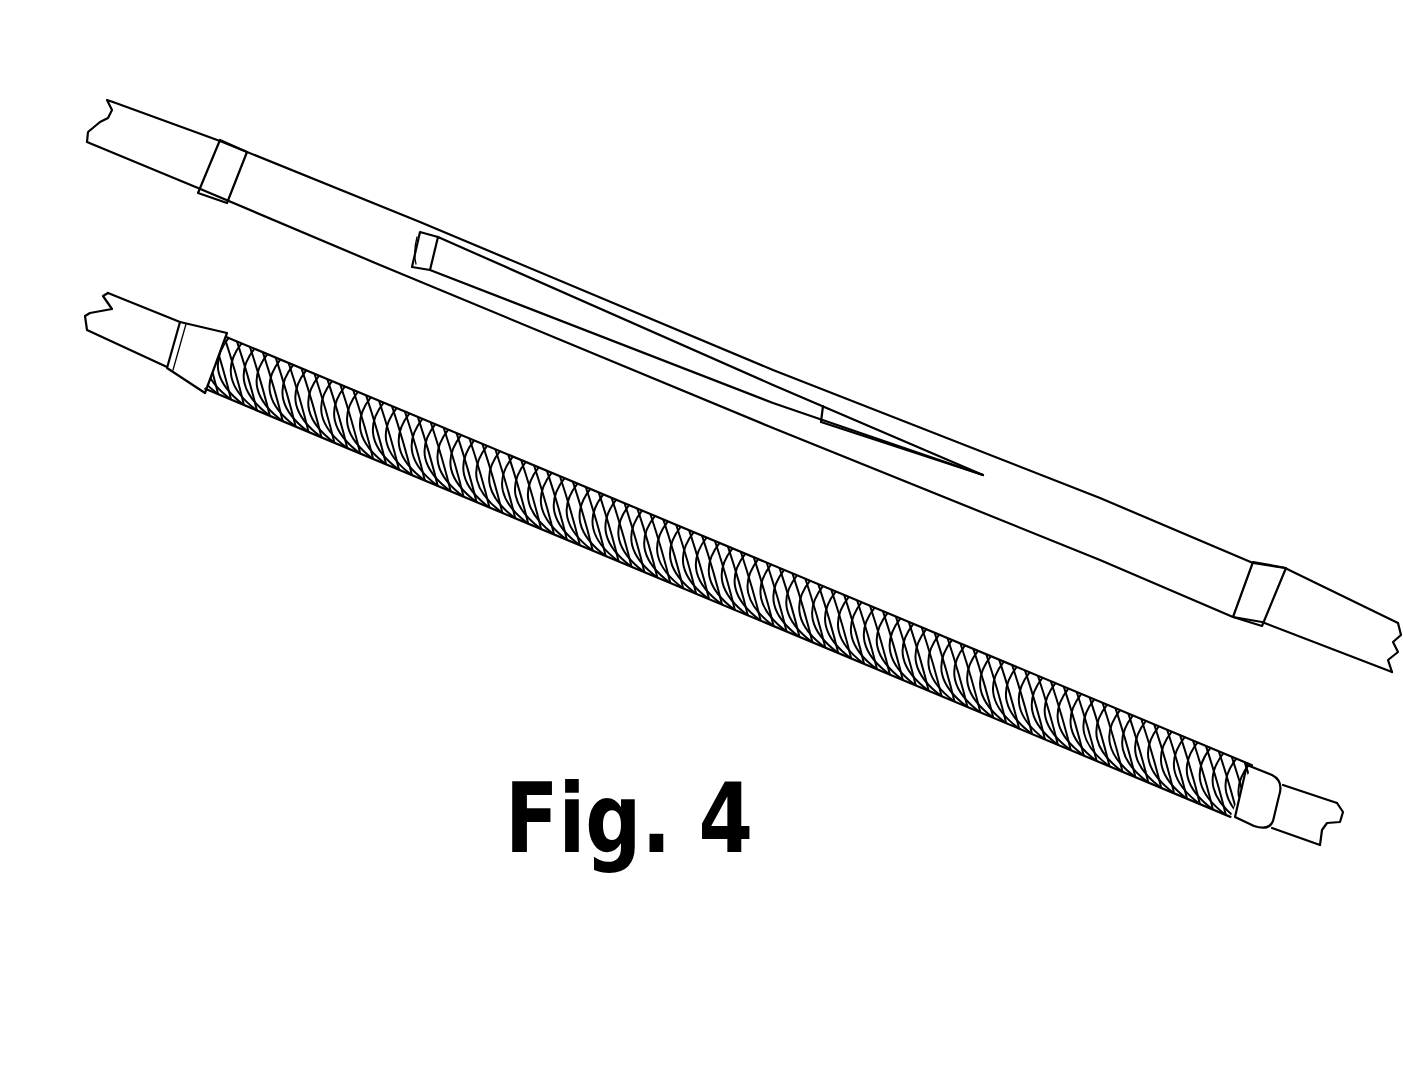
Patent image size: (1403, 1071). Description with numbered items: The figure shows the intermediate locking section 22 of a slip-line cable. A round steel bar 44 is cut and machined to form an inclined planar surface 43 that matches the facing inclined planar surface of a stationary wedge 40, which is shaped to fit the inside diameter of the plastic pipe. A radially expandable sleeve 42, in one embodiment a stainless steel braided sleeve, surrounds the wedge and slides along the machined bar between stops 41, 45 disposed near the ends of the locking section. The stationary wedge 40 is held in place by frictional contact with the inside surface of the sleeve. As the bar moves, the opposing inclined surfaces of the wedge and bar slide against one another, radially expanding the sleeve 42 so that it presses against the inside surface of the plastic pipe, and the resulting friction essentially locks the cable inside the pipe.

The intermediate locking section 22 is at (948, 298).
The stationary wedge 40 is at (583, 300).
The stop 41 is at (243, 150).
The radially expandable sleeve 42 is at (958, 708).
The inclined planar surface 43 is at (853, 422).
The round steel bar 44 is at (1310, 588).
The stop 45 is at (1265, 560).